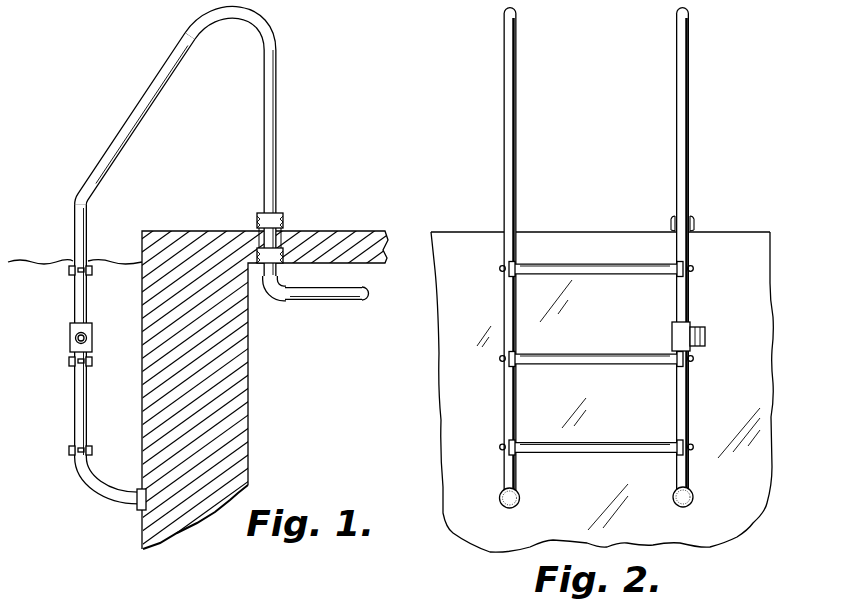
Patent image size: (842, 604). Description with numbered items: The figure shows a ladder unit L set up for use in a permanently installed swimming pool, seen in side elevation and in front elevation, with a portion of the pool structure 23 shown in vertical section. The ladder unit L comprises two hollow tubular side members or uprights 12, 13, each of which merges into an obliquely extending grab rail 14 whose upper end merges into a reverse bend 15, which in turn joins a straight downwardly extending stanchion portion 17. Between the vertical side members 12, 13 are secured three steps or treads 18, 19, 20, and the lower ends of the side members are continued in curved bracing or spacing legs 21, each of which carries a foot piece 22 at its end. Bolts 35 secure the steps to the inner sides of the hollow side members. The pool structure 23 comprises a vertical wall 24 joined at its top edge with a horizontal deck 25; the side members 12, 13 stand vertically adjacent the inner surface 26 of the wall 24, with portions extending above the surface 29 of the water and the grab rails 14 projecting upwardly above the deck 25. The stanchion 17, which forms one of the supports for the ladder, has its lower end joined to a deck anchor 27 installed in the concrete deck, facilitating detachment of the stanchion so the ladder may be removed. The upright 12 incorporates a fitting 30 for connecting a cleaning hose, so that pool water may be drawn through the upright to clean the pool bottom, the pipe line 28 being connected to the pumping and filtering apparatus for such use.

In FIG. 1, the side member or upright 12 is at (77, 301).
In FIG. 2, the side member or upright 12 is at (690, 290).
In FIG. 2, the side member or upright 13 is at (503, 302).
In FIG. 1, the grab rail 14 is at (158, 74).
In FIG. 2, the grab rail 14 is at (503, 119).
In FIG. 1, the reverse bend 15 is at (258, 9).
In FIG. 2, the reverse bend 15 is at (519, 10).
In FIG. 1, the stanchion portion 17 is at (277, 109).
In FIG. 1, the step or tread 18 is at (68, 271).
In FIG. 2, the step or tread 18 is at (598, 271).
In FIG. 1, the step or tread 19 is at (68, 362).
In FIG. 2, the step or tread 19 is at (572, 366).
In FIG. 1, the step or tread 20 is at (68, 451).
In FIG. 2, the step or tread 20 is at (598, 454).
In FIG. 1, the curved bracing or spacing leg 21 is at (98, 502).
In FIG. 1, the foot piece 22 is at (138, 510).
In FIG. 2, the foot piece 22 is at (510, 507).
In FIG. 1, the pool structure 23 is at (179, 228).
In FIG. 1, the vertical wall 24 is at (237, 433).
In FIG. 1, the horizontal deck 25 is at (368, 232).
In FIG. 2, the horizontal deck 25 is at (720, 232).
In FIG. 1, the face or inner surface of the wall 26 is at (145, 546).
In FIG. 2, the face or inner surface of the wall 26 is at (450, 433).
In FIG. 1, the fitting or deck anchor 27 is at (284, 226).
In FIG. 2, the fitting or deck anchor 27 is at (693, 222).
In FIG. 1, the pipe line 28 is at (320, 300).
In FIG. 1, the surface of the water 29 is at (118, 262).
In FIG. 1, the fitting 30 is at (92, 337).
In FIG. 2, the fitting 30 is at (692, 326).
In FIG. 1, the bolts 35 is at (83, 446).
In FIG. 2, the bolts 35 is at (502, 359).
In FIG. 1, the ladder unit L is at (288, 67).
In FIG. 2, the ladder unit L is at (700, 96).